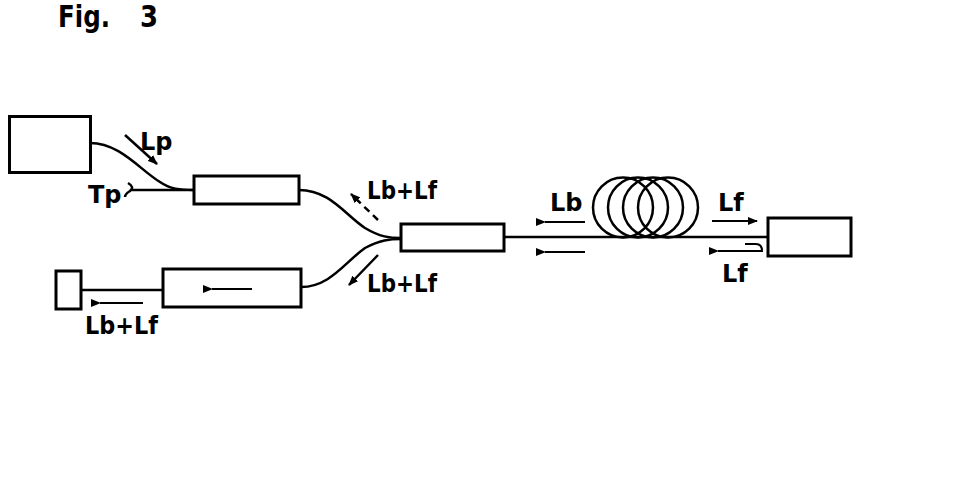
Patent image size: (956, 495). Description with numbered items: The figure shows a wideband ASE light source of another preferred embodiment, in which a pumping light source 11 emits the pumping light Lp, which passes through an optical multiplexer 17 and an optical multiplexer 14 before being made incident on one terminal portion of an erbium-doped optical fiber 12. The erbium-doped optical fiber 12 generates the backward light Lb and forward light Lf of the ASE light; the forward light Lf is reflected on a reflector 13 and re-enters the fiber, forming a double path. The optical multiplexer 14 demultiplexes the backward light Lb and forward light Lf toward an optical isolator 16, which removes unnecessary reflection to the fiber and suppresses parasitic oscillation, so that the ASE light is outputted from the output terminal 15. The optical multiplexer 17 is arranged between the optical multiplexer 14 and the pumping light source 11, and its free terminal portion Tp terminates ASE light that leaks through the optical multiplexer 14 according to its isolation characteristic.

The pumping light source 11 is at (60, 126).
The erbium-doped optical fiber 12 is at (652, 178).
The reflector 13 is at (810, 222).
The optical multiplexer 14 is at (475, 230).
The output terminal 15 is at (63, 282).
The optical isolator 16 is at (250, 306).
The optical multiplexer 17 is at (243, 188).